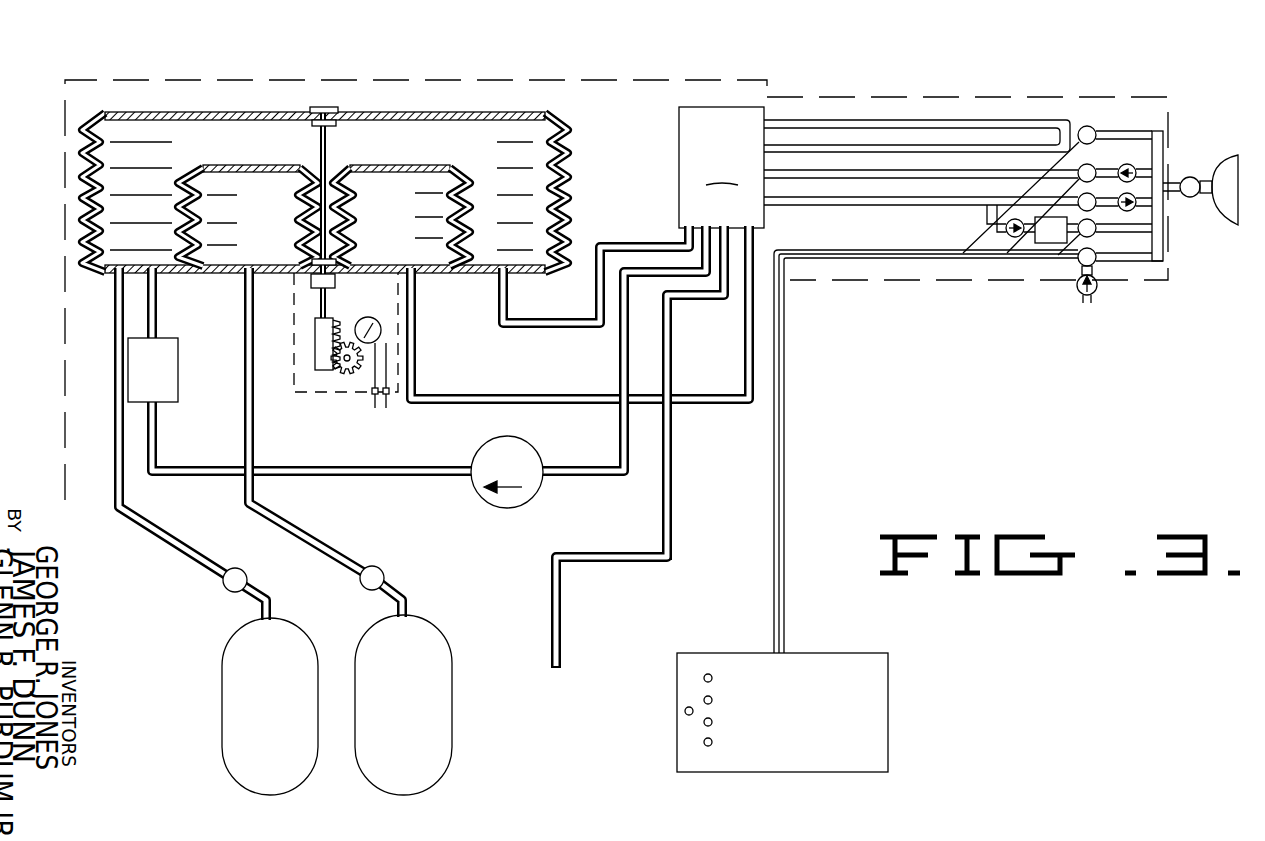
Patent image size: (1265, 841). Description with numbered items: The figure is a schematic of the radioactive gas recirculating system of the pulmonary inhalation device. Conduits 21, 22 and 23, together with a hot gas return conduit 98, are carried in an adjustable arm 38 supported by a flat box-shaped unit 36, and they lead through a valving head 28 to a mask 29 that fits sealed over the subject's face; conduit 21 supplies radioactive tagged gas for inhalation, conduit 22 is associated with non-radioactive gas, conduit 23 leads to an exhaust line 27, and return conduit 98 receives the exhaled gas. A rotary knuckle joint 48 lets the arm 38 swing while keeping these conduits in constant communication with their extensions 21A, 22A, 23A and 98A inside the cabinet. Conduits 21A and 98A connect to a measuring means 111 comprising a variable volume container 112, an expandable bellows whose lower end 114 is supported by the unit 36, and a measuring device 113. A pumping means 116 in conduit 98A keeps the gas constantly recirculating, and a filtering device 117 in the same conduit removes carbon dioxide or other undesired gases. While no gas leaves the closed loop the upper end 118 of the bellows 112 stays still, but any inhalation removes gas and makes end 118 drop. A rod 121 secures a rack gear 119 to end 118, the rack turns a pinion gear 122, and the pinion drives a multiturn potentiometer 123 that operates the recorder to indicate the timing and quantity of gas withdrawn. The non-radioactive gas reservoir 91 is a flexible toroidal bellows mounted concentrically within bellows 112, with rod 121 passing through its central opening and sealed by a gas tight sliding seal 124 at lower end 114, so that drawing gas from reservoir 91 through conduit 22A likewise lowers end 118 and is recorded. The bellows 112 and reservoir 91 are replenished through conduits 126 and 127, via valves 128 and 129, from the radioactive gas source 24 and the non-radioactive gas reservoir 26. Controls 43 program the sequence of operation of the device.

The box-shaped unit 36 is at (120, 78).
The measuring means 111 is at (288, 176).
The variable volume container 112 is at (447, 105).
The upper end of bellows 118 is at (238, 112).
The lower end of bellows 114 is at (108, 275).
The non-radioactive gas reservoir 91 is at (266, 243).
The gas tight sliding seal 124 is at (357, 258).
The rod 121 is at (330, 150).
The measuring device 113 is at (360, 359).
The pinion gear 122 is at (338, 378).
The rack gear 119 is at (330, 322).
The multiturn potentiometer 123 is at (373, 323).
The filtering device 117 is at (172, 392).
The pumping means 116 is at (480, 448).
The conduit extension 21A is at (657, 243).
The conduit extension 22A is at (485, 393).
The conduit extension 23A is at (672, 530).
The return conduit extension 98A is at (571, 477).
The exhaust line 27 is at (561, 630).
The replenishment conduit 126 is at (178, 553).
The replenishment conduit 127 is at (328, 552).
The valve 128 is at (224, 590).
The valve 129 is at (386, 578).
The source of radioactive tagged gas 24 is at (225, 712).
The reservoir of non-radioactive gas 26 is at (452, 762).
The knuckle joint 48 is at (721, 167).
The conduit 21 is at (845, 122).
The conduit 22 is at (885, 200).
The conduit 23 is at (972, 172).
The return conduit 98 is at (795, 145).
The valving head 28 is at (1134, 88).
The mask 29 is at (1229, 165).
The adjustable arm 38 is at (902, 288).
The controls 43 is at (888, 720).